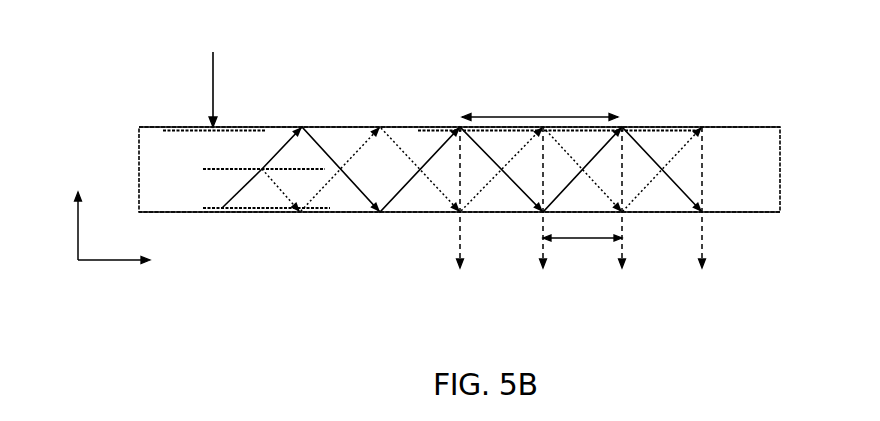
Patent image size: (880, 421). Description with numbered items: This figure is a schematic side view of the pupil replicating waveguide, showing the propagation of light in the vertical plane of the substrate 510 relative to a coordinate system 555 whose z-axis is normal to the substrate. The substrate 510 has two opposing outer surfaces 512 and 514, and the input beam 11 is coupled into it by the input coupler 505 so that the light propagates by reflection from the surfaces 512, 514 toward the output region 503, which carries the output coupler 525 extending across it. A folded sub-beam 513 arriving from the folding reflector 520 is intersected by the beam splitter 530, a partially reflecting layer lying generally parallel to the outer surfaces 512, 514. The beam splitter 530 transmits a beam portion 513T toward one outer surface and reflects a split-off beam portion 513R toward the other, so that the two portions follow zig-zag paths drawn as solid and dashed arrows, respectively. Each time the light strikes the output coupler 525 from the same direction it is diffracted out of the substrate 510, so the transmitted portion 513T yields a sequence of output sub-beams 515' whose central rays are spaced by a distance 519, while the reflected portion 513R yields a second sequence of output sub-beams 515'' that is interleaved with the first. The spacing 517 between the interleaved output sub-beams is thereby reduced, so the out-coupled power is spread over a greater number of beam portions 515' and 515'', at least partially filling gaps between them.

The input beam 11 is at (217, 77).
The output region 503 is at (620, 88).
The input coupler 505 is at (198, 124).
The substrate 510 is at (768, 210).
The outer surface 512 is at (327, 124).
The folded sub-beam 513 is at (237, 198).
The transmitted beam portion 513T is at (272, 127).
The reflected beam portion 513R is at (276, 183).
The outer surface 514 is at (377, 216).
The output sub-beams 515' is at (544, 203).
The second output sub-beams 515'' is at (624, 202).
The out-coupled beam spacing 517 is at (567, 242).
The distance 519 is at (502, 117).
The folding reflector 520 is at (248, 218).
The output coupler 525 is at (693, 127).
The beam splitter 530 is at (248, 167).
The coordinate system 555 is at (99, 253).